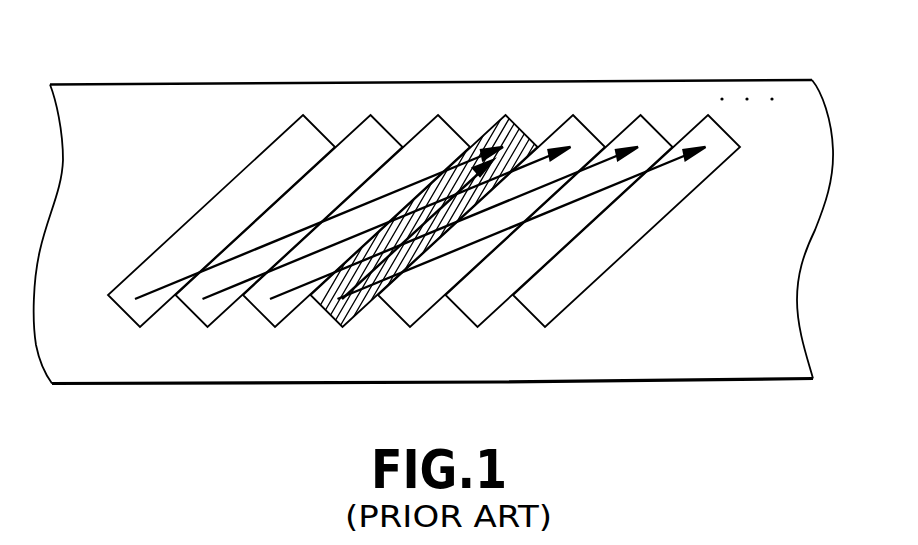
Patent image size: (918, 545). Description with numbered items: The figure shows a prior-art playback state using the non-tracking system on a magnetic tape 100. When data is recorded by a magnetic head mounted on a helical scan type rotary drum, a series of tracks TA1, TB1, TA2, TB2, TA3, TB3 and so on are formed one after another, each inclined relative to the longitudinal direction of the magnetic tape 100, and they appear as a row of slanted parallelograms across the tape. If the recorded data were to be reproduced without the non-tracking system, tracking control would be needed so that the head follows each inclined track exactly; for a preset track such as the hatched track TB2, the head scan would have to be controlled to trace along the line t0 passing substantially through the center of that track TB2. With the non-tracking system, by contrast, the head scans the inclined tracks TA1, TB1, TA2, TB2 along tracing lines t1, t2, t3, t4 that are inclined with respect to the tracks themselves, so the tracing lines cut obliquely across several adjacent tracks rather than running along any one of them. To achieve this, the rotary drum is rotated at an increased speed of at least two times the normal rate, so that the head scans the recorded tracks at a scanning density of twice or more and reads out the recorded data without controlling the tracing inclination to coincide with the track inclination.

The magnetic tape 100 is at (763, 29).
The track TA1 is at (232, 207).
The track TB1 is at (296, 207).
The track TA2 is at (365, 207).
The track TB2 is at (446, 214).
The track TA3 is at (503, 207).
The track TB3 is at (571, 207).
The line passing substantially through the center of the track t0 is at (401, 271).
The tracing line t1 is at (367, 288).
The tracing line t2 is at (299, 288).
The tracing line t3 is at (231, 288).
The tracing line t4 is at (164, 289).